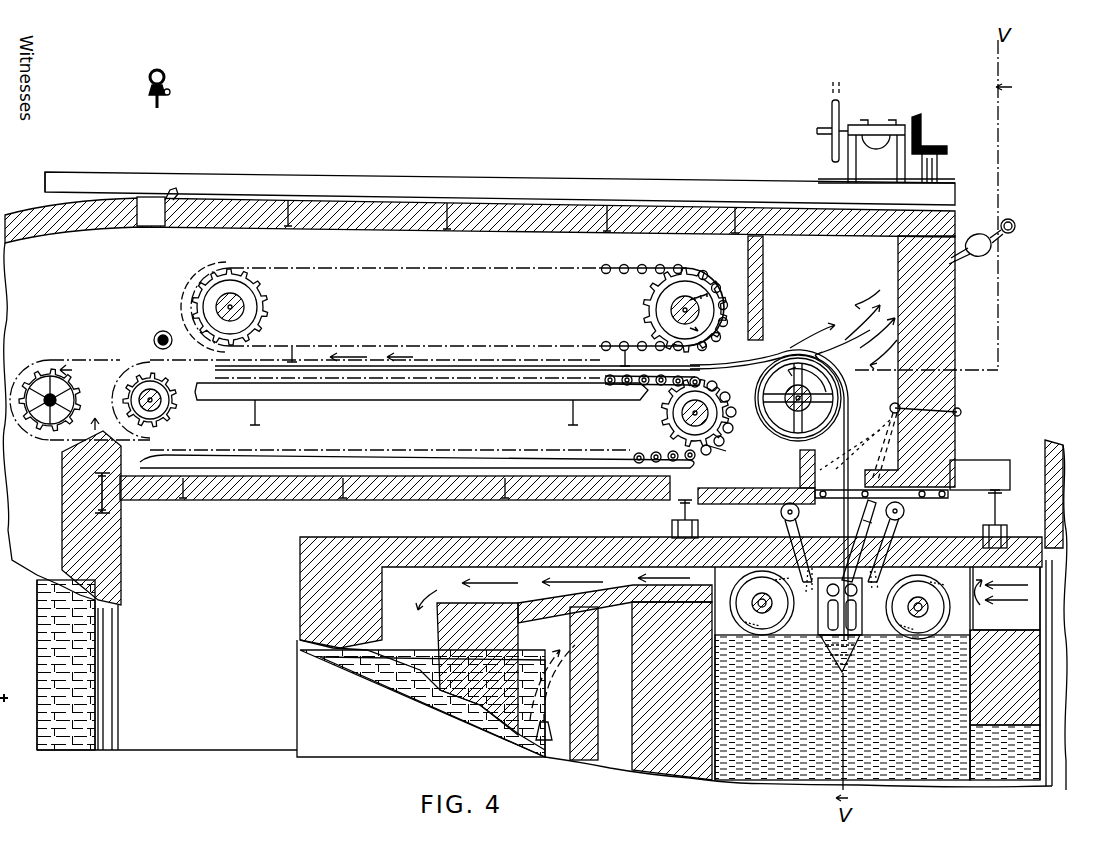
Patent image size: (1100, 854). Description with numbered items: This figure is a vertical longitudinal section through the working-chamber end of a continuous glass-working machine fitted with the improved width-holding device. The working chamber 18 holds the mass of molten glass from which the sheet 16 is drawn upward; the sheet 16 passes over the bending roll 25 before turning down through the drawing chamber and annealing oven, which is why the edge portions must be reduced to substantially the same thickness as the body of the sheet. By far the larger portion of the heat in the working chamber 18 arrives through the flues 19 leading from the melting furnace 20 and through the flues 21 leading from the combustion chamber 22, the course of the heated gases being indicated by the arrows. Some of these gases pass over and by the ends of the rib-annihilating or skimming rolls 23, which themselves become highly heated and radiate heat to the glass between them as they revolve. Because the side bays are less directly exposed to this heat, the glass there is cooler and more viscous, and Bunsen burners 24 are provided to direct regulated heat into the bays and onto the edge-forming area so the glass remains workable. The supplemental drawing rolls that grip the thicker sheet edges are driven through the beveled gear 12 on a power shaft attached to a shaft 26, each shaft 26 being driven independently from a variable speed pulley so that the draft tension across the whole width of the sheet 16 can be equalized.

The beveled gear 12 is at (822, 623).
The sheet 16 is at (784, 495).
The working chamber 18 is at (790, 740).
The flues 19 is at (1048, 591).
The melting furnace 20 is at (1050, 730).
The flues 21 is at (615, 647).
The combustion chamber 22 is at (572, 630).
The rib-annihilating or skimming rolls 23 is at (700, 536).
The Bunsen burners 24 is at (920, 522).
The bending roll 25 is at (734, 455).
The shaft 26 is at (887, 541).